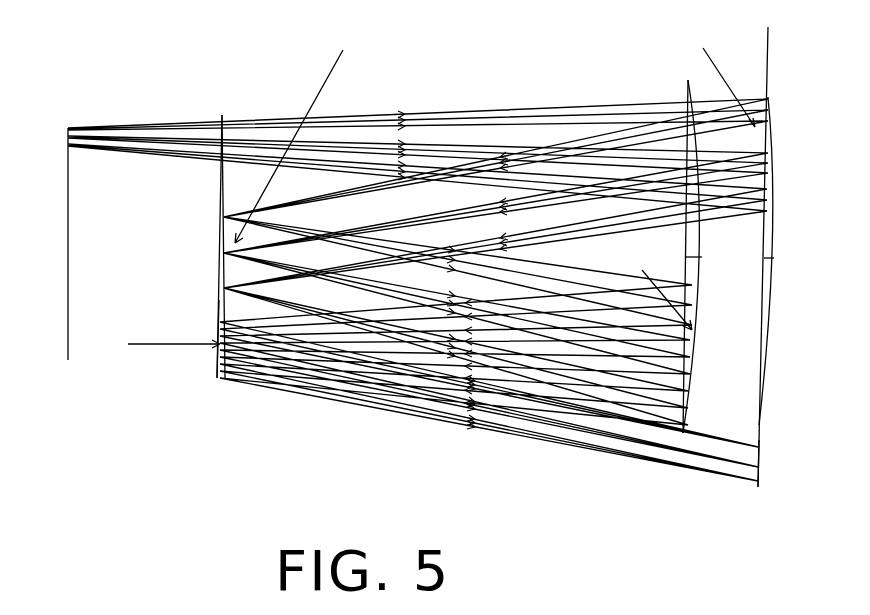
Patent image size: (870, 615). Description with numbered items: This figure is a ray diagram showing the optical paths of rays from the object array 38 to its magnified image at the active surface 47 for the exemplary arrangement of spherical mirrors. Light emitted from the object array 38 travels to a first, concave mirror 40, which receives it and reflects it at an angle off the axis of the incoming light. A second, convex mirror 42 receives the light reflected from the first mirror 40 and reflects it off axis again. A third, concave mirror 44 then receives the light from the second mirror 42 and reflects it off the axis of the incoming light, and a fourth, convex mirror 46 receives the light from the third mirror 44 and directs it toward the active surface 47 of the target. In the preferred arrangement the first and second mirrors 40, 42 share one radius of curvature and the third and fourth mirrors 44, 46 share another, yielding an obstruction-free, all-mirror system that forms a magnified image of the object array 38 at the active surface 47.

The object array 38 is at (68, 141).
The first concave mirror 40 is at (777, 175).
The second convex mirror 42 is at (222, 270).
The third concave mirror 44 is at (695, 350).
The fourth convex mirror 46 is at (216, 366).
The active surface 47 is at (760, 469).